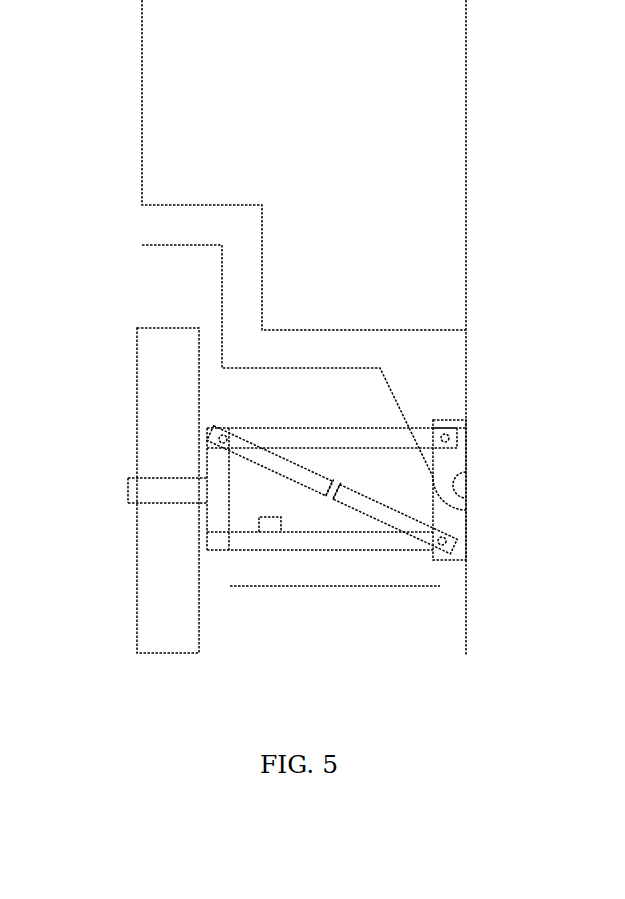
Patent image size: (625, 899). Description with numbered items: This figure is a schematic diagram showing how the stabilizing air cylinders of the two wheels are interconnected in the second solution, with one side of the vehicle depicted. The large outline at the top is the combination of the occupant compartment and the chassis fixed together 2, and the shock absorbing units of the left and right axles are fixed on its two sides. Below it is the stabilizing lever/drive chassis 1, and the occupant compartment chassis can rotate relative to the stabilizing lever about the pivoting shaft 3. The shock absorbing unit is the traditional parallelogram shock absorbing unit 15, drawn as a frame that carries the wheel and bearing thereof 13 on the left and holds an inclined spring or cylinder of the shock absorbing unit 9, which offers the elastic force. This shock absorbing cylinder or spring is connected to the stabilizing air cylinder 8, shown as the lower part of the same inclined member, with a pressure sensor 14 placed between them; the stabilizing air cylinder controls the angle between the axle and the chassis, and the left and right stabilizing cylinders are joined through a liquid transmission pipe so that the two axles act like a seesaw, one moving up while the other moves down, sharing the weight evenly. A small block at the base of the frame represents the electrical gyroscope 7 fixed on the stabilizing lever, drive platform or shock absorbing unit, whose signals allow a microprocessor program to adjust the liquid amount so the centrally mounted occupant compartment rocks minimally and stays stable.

The stabilizing lever/drive chassis 1 is at (454, 454).
The combination of the occupant compartment and the chassis fixed together 2 is at (304, 255).
The pivoting shaft 3 is at (478, 487).
The electrical gyroscope 7 is at (267, 537).
The stabilizing air cylinder 8 is at (402, 537).
The spring or cylinder of the shock absorbing unit 9 is at (283, 454).
The wheel and bearing thereof 13 is at (118, 488).
The pressure sensor 14 is at (337, 513).
The parallelogram shock absorbing unit 15 is at (444, 577).